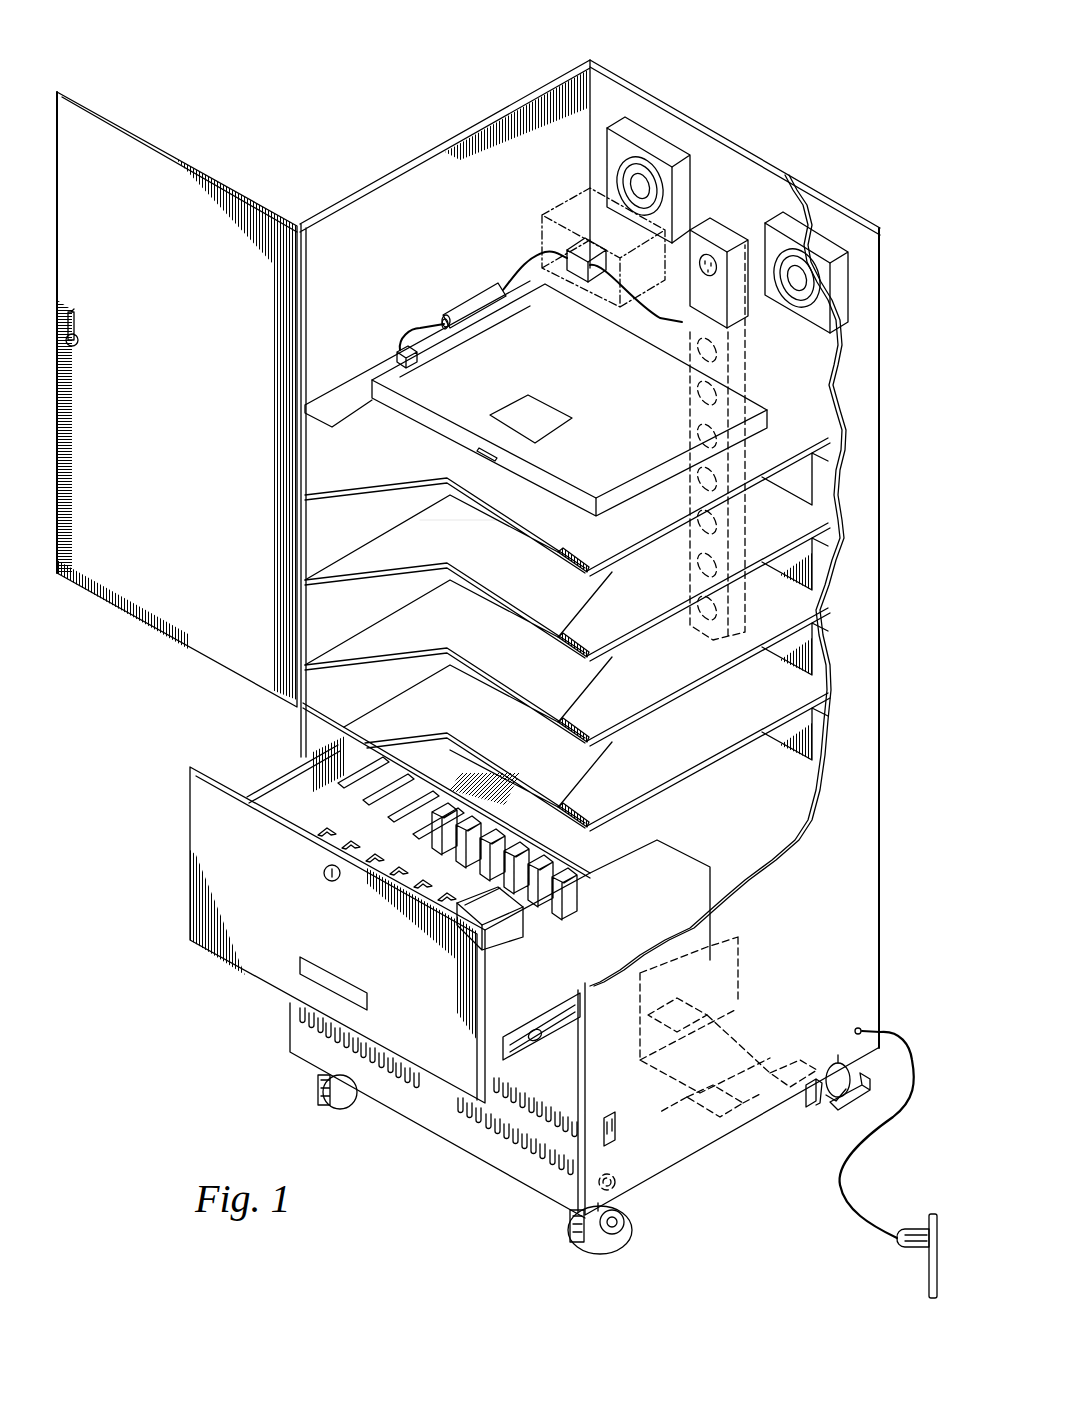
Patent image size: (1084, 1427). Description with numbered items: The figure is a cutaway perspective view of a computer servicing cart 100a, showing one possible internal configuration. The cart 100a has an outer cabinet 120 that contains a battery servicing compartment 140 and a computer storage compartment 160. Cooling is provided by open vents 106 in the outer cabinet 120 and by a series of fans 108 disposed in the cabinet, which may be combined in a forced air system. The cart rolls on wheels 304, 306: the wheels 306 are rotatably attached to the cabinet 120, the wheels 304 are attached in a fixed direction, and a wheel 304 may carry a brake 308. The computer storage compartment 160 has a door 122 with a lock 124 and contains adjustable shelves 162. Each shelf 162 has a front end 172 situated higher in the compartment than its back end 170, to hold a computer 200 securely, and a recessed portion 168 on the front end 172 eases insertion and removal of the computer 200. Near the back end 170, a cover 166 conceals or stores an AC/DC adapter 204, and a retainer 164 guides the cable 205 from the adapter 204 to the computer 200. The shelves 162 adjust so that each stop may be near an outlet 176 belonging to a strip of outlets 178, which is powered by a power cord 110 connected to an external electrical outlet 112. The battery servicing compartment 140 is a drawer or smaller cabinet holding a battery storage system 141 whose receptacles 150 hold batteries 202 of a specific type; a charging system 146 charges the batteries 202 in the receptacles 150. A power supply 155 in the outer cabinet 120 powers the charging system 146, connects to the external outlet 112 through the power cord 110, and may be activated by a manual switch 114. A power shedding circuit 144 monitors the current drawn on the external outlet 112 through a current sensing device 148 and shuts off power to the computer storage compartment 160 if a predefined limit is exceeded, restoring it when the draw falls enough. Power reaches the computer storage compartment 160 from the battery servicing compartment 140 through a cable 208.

The computer servicing cart 100a is at (352, 72).
The vents 106 is at (455, 1120).
The fans 108 is at (646, 138).
The power cord 110 is at (845, 1214).
The external electrical outlet 112 is at (925, 1277).
The manual switch 114 is at (615, 1115).
The outer cabinet 120 is at (846, 210).
The door 122 is at (192, 438).
The lock 124 is at (80, 326).
The battery servicing compartment 140 is at (188, 795).
The battery storage system 141 is at (297, 807).
The power shedding circuit 144 is at (700, 1005).
The charging system 146 is at (740, 945).
The current sensing device 148 is at (788, 1050).
The receptacles 150 is at (383, 798).
The power supply 155 is at (720, 1150).
The computer storage compartment 160 is at (348, 218).
The shelves 162 is at (660, 538).
The retainer 164 is at (470, 312).
The cover 166 is at (571, 200).
The recessed portion 168 is at (497, 502).
The back end 170 is at (829, 462).
The front end 172 is at (303, 490).
The outlet 176 is at (712, 256).
The strip of outlets 178 is at (698, 226).
The computer 200 is at (649, 422).
The batteries 202 is at (578, 900).
The AC/DC adapter 204 is at (578, 270).
The cable 205 is at (403, 336).
The cable 208 is at (702, 698).
The wheels 304 is at (800, 1105).
The wheels 306 is at (315, 1090).
The brake 308 is at (834, 1130).